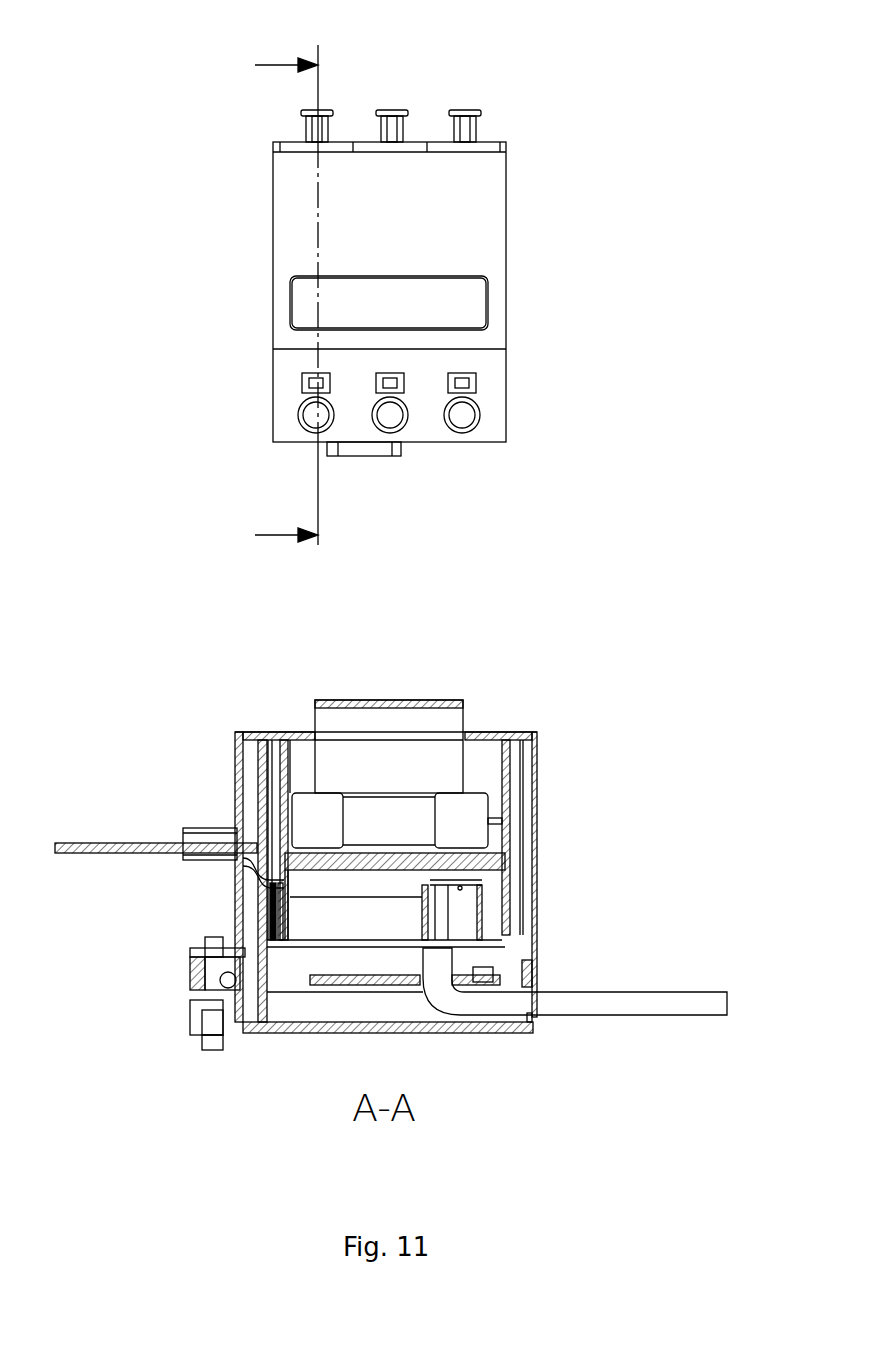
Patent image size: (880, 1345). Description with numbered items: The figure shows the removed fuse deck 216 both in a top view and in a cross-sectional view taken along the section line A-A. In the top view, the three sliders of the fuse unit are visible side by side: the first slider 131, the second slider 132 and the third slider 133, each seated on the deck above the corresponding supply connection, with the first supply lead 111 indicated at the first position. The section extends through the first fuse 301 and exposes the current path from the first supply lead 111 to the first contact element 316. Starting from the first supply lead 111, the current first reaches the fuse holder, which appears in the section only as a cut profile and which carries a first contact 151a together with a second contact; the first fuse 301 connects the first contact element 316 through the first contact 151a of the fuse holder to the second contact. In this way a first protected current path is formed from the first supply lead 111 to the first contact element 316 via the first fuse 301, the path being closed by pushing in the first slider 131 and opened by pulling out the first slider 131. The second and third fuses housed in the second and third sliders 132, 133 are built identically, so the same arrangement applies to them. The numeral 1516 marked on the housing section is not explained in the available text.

The fuse deck 216 is at (597, 72).
The first slider 131 is at (333, 147).
The second slider 132 is at (407, 147).
The third slider 133 is at (480, 147).
The first supply lead 111 is at (310, 413).
The first fuse 301 is at (407, 817).
The first contact element 316 is at (110, 843).
The housing 1516 is at (490, 893).
The first contact 151a is at (265, 903).